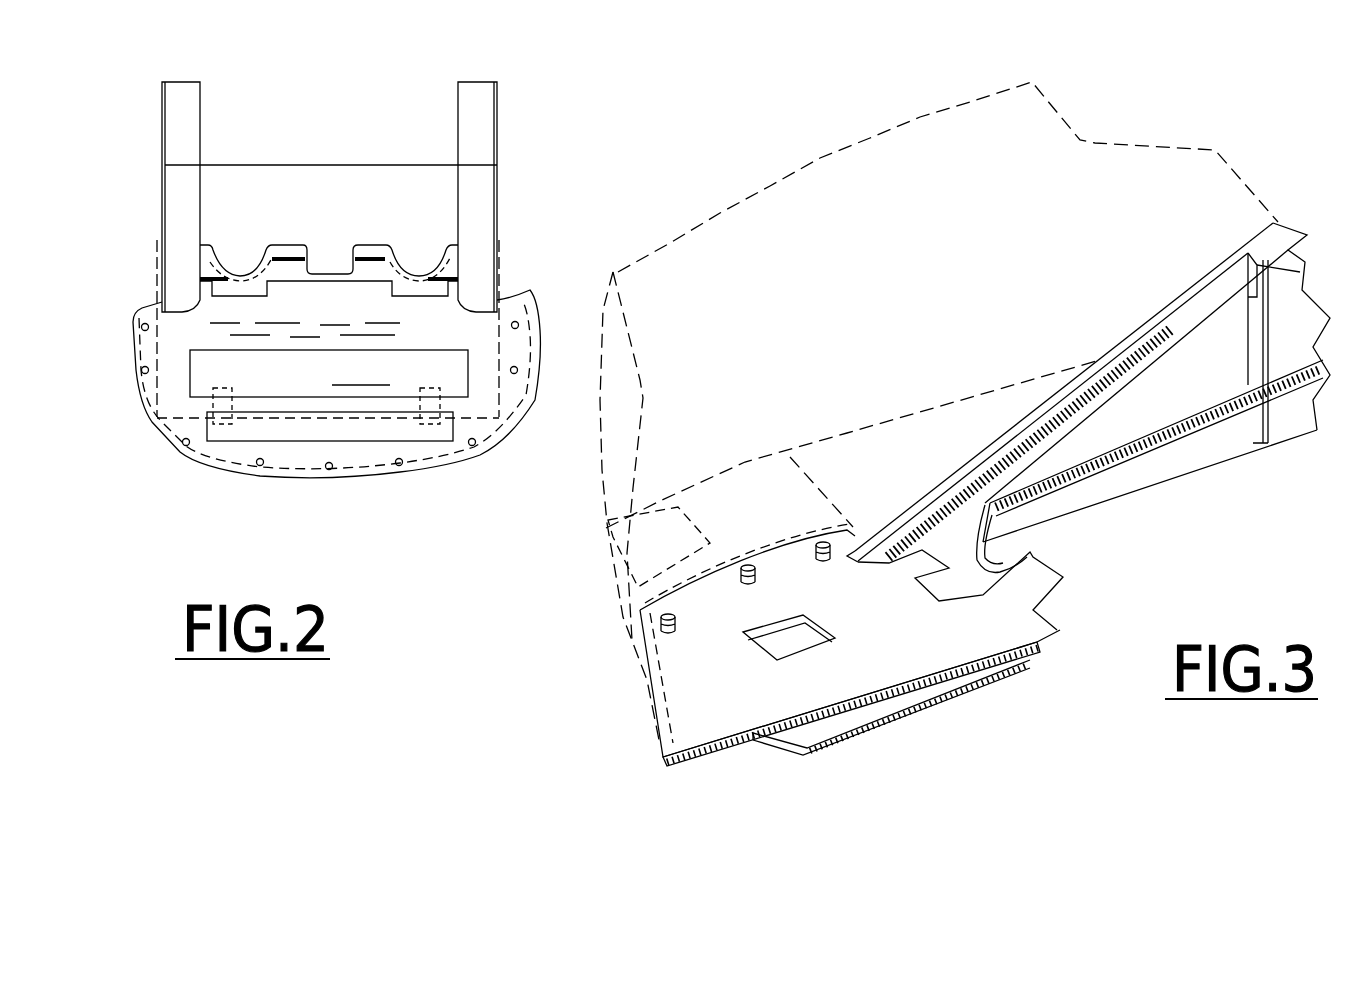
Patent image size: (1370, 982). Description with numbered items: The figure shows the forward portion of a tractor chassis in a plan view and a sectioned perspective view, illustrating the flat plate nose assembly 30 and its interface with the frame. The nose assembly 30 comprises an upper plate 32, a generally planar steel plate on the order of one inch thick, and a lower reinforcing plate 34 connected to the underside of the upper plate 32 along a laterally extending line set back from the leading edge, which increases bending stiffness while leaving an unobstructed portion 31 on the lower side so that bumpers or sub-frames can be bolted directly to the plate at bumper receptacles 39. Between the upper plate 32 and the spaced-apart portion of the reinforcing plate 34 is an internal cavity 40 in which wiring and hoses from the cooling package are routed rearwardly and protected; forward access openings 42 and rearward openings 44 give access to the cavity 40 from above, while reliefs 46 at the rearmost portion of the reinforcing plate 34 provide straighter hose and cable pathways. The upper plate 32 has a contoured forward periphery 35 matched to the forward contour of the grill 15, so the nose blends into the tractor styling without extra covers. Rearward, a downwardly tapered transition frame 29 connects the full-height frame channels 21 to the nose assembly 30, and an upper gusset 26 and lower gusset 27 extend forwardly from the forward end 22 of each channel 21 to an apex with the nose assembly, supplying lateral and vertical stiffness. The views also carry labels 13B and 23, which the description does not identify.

In FIG. 2, the lower hull section 13B is at (263, 432).
In FIG. 3, the intake grill 15 is at (618, 458).
In FIG. 2, the frame channel 21 is at (162, 118).
In FIG. 3, the frame channel 21 is at (1287, 347).
In FIG. 3, the forward end of frame channel 22 is at (1252, 343).
In FIG. 2, the upright member 23 is at (178, 92).
In FIG. 3, the upright member 23 is at (1262, 258).
In FIG. 2, the upper gusset 26 is at (175, 178).
In FIG. 3, the upper gusset 26 is at (1162, 330).
In FIG. 3, the lower gusset 27 is at (1107, 483).
In FIG. 2, the transition frame 29 is at (140, 222).
In FIG. 3, the transition frame 29 is at (1183, 427).
In FIG. 2, the flat plate nose assembly 30 is at (145, 483).
In FIG. 3, the flat plate nose assembly 30 is at (722, 785).
In FIG. 3, the unobstructed portion 31 is at (668, 760).
In FIG. 2, the upper plate 32 is at (185, 325).
In FIG. 3, the upper plate 32 is at (690, 645).
In FIG. 2, the lower reinforcing plate 34 is at (372, 270).
In FIG. 3, the lower reinforcing plate 34 is at (957, 707).
In FIG. 2, the contoured forward periphery 35 is at (385, 480).
In FIG. 2, the bumper receptacles 39 is at (142, 370).
In FIG. 3, the bumper receptacles 39 is at (820, 545).
In FIG. 3, the internal cavity 40 is at (997, 697).
In FIG. 2, the forward access openings 42 is at (222, 405).
In FIG. 3, the forward access openings 42 is at (785, 630).
In FIG. 2, the rearward openings 44 is at (280, 288).
In FIG. 3, the rearward openings 44 is at (967, 610).
In FIG. 2, the reliefs 46 is at (266, 258).